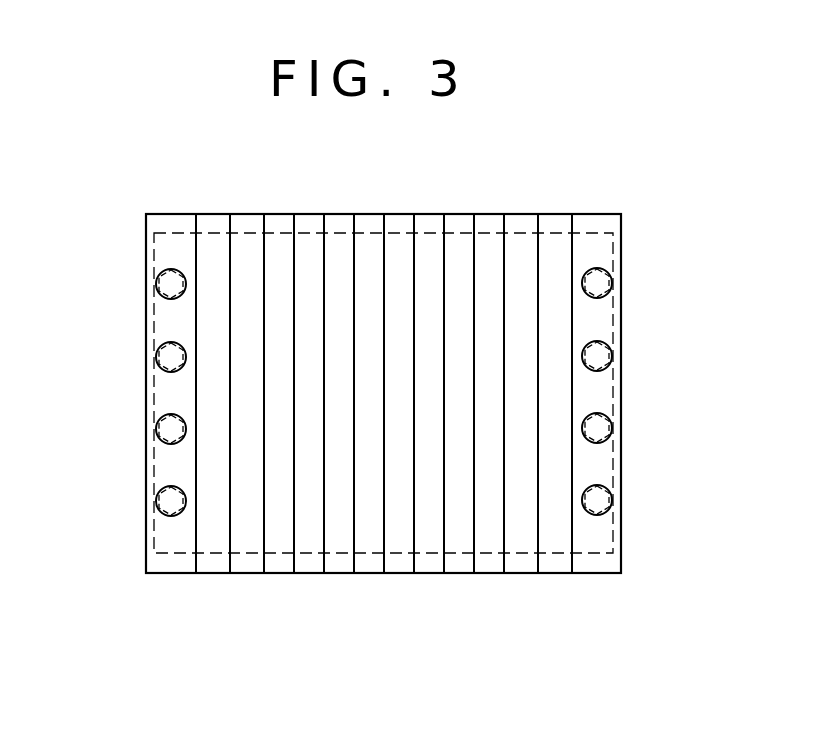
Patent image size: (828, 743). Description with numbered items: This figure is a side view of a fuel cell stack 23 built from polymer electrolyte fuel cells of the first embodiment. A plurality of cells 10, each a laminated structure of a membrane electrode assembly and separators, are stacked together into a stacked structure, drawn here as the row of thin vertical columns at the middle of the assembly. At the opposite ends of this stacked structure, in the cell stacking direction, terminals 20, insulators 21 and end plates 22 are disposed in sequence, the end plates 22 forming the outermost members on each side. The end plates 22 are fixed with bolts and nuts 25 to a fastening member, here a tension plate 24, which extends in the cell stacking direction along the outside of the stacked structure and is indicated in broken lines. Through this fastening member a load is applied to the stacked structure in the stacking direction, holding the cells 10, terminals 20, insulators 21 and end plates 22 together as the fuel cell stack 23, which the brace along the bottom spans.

The polymer electrolyte fuel cell 10 is at (488, 222).
The terminal 20 is at (246, 223).
The insulator 21 is at (215, 225).
The end plate 22 is at (173, 227).
The fuel cell stack 23 is at (146, 593).
The tension plate 24 is at (152, 323).
The bolts and nuts 25 is at (167, 283).